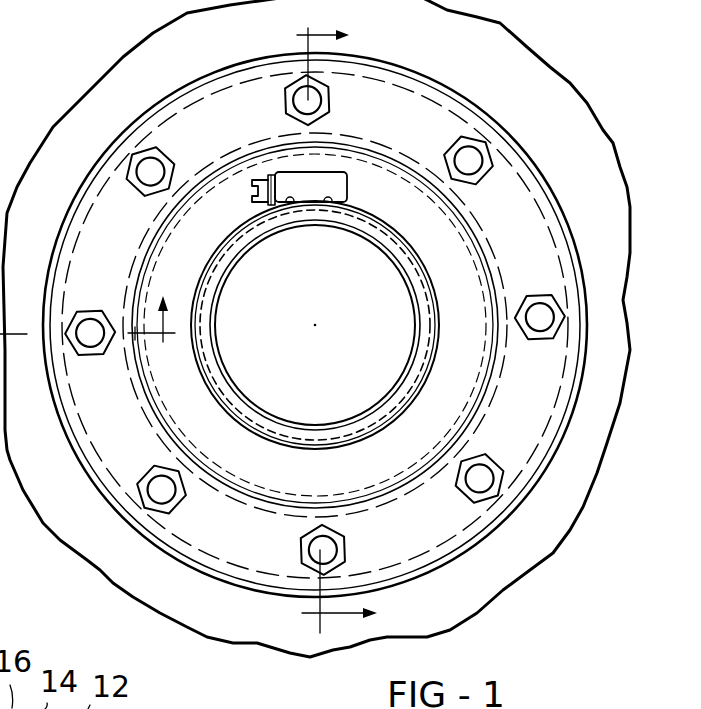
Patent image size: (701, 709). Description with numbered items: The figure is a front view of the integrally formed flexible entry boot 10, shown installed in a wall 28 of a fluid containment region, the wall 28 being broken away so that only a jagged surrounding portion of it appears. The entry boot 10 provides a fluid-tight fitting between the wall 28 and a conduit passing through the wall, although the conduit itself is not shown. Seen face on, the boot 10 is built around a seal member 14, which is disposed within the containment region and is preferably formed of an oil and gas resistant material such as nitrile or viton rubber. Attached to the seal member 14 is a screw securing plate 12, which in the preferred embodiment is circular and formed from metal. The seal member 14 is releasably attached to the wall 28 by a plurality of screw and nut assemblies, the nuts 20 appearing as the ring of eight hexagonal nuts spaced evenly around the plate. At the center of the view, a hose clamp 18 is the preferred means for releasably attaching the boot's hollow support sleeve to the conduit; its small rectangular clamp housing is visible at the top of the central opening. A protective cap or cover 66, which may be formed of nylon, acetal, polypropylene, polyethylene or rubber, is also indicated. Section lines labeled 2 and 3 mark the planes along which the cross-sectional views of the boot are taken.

The flexible entry boot 10 is at (407, 62).
The screw securing plate 12 is at (515, 205).
The seal member 14 is at (457, 293).
The hose clamp 18 is at (337, 173).
The nut 20 is at (338, 533).
The wall 28 is at (543, 95).
The protective cap 66 is at (478, 478).
The section line 2- 2 is at (350, 323).
The section line 3- 3 is at (151, 299).